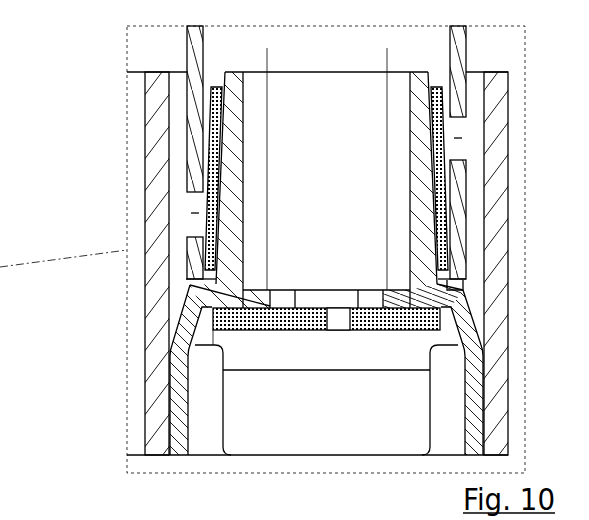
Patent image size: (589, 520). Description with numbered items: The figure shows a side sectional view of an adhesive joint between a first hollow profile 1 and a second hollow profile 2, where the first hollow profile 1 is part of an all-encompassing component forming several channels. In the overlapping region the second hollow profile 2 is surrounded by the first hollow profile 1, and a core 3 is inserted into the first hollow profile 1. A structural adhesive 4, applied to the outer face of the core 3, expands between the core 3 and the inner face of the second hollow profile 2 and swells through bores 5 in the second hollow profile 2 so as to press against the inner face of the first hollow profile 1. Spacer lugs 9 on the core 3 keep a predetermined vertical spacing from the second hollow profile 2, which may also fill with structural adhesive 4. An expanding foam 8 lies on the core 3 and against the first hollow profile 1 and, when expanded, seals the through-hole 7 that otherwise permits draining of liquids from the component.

The first hollow profile 1 is at (135, 298).
The second hollow profile 2 is at (482, 48).
The core 3 is at (489, 382).
The structural adhesive 4 is at (448, 190).
The bores 5 is at (185, 198).
The through-hole 7 is at (322, 326).
The expanding foam 8 is at (440, 313).
The spacer lugs 9 is at (183, 297).